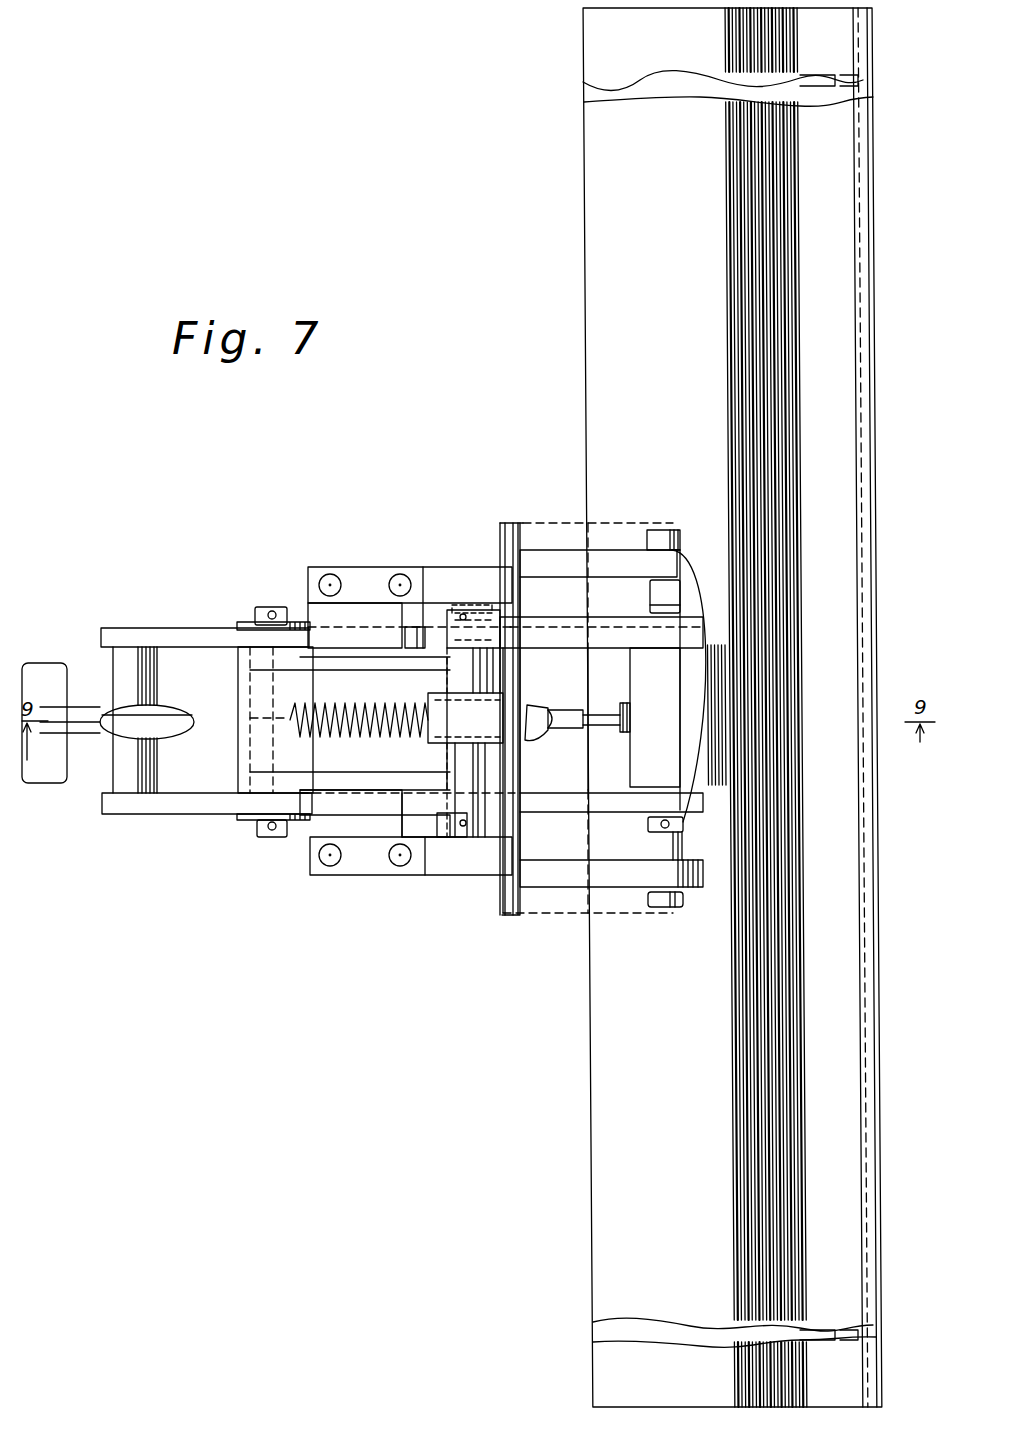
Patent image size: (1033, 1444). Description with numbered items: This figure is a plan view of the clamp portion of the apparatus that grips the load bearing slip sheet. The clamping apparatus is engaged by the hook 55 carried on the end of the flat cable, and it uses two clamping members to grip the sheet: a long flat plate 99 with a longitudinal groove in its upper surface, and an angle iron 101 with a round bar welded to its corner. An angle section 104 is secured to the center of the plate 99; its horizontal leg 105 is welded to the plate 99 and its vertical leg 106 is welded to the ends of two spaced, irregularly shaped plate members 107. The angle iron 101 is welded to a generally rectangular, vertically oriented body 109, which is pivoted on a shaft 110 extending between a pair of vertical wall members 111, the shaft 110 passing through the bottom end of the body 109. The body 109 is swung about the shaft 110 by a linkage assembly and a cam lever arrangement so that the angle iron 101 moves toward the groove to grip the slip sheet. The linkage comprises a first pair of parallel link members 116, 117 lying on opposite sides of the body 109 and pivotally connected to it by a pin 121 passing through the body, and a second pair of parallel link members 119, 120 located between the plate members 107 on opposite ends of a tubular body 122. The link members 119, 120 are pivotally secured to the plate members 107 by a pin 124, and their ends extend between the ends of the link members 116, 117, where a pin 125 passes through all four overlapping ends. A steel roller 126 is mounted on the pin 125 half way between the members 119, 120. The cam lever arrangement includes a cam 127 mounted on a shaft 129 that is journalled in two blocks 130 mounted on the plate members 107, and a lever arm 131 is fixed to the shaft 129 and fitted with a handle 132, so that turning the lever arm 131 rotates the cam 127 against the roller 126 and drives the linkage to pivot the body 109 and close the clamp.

The hook 55 is at (163, 723).
The long flat plate 99 is at (593, 118).
The angle iron 101 is at (850, 885).
The angle section 104 is at (510, 918).
The horizontal leg 105 is at (570, 900).
The vertical leg 106 is at (512, 893).
The plate members 107 is at (120, 632).
The body 109 is at (665, 680).
The shaft 110 is at (685, 848).
The vertical wall members 111 is at (570, 560).
The link member 116 is at (570, 650).
The link member 117 is at (578, 800).
The link member 119 is at (290, 655).
The link member 120 is at (345, 775).
The pin 121 is at (695, 820).
The tubular body 122 is at (240, 702).
The pin 124 is at (265, 830).
The pin 125 is at (450, 830).
The steel roller 126 is at (427, 738).
The cam 127 is at (488, 735).
The shaft 129 is at (465, 678).
The blocks 130 is at (368, 580).
The lever arm 131 is at (612, 633).
The handle 132 is at (705, 603).